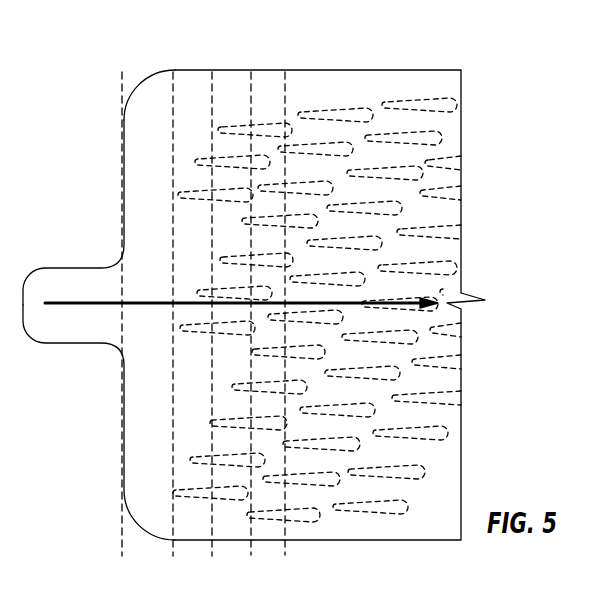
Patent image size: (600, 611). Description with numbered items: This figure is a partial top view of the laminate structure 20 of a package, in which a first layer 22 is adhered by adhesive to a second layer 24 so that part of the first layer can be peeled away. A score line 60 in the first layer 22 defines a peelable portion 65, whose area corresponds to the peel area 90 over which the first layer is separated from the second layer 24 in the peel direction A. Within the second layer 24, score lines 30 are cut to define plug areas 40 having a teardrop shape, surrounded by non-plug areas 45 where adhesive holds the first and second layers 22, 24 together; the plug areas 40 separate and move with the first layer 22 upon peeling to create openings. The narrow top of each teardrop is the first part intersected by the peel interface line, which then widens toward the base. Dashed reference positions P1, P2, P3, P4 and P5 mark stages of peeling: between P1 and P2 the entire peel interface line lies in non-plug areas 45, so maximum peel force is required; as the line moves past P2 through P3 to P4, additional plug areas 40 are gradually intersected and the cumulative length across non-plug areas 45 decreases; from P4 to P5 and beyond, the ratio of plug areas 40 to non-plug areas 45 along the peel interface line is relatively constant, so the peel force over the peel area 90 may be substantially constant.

The laminate structure 20 is at (358, 58).
The first layer 22 is at (383, 85).
The second layer 24 is at (419, 80).
The score lines 30 is at (320, 517).
The plug areas 40 is at (412, 470).
The non-plug areas 45 is at (383, 488).
The score line 60 is at (123, 165).
The peelable portion 65 is at (123, 442).
The peel area 90 is at (150, 72).
The peel direction A is at (77, 303).
The reference position P1 is at (121, 527).
The reference position P2 is at (172, 552).
The reference position P3 is at (212, 552).
The reference position P4 is at (249, 553).
The reference position P5 is at (284, 553).